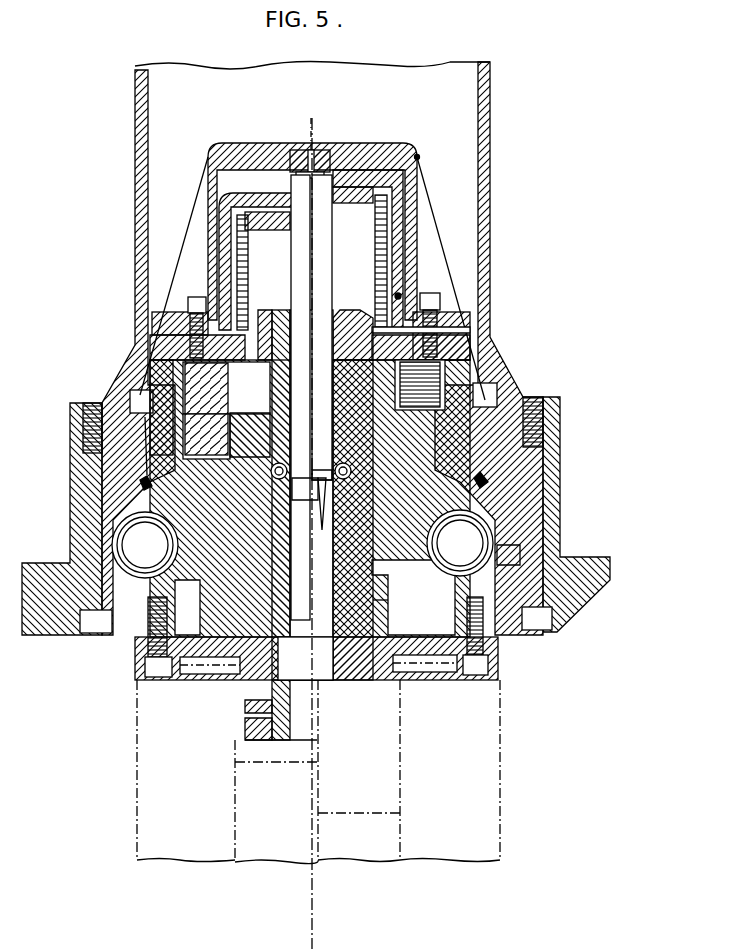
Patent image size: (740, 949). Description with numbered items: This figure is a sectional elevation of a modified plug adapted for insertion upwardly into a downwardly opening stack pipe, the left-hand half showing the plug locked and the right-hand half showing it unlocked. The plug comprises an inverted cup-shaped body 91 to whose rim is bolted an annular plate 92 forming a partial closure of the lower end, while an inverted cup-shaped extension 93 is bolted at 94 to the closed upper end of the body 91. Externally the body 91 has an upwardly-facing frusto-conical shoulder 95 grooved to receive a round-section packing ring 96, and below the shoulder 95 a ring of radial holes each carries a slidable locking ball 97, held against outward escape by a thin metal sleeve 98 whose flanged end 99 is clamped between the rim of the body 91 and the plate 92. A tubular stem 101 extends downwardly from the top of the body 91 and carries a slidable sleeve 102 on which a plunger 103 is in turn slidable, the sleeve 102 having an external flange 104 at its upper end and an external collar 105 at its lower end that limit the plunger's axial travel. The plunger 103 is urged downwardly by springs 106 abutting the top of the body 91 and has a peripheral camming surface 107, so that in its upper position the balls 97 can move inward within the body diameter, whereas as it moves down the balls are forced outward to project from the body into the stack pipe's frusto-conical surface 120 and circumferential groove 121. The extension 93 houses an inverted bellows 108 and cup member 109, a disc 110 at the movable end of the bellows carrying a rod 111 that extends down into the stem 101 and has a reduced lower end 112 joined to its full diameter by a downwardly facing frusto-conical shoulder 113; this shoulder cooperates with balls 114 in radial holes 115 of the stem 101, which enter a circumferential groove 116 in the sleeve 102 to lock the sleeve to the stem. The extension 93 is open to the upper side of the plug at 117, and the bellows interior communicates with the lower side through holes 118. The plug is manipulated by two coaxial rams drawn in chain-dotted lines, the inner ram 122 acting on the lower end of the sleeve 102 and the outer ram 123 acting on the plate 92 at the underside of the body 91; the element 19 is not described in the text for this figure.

The left flange 19 is at (70, 527).
The inverted cup-shaped body 91 is at (465, 362).
The annular plate 92 is at (213, 655).
The inverted cup-shaped extension 93 is at (420, 157).
The bolts 94 is at (195, 305).
The frusto-conical shoulder 95 is at (143, 457).
The packing ring 96 is at (143, 482).
The locking ball 97 is at (133, 553).
The thin metal sleeve 98 is at (515, 630).
The flanged end 99 is at (490, 640).
The tubular stem 101 is at (285, 605).
The sleeve 102 is at (372, 603).
The plunger 103 is at (440, 550).
The external flange 104 is at (258, 427).
The external collar 105 is at (395, 663).
The spring 106 is at (195, 385).
The camming surface 107 is at (310, 486).
The bellows 108 is at (225, 262).
The cup member 109 is at (238, 232).
The disc 110 is at (262, 193).
The rod 111 is at (298, 290).
The reduced lower end 112 is at (318, 505).
The frusto-conical shoulder 113 is at (336, 446).
The balls 114 is at (290, 470).
The radial holes 115 is at (330, 430).
The circumferential groove 116 is at (343, 410).
The opening 117 is at (300, 148).
The holes 118 is at (418, 330).
The frusto-conical surface 120 is at (515, 508).
The circumferential groove 121 is at (508, 548).
The inner ram 122 is at (338, 820).
The outer ram 123 is at (160, 818).